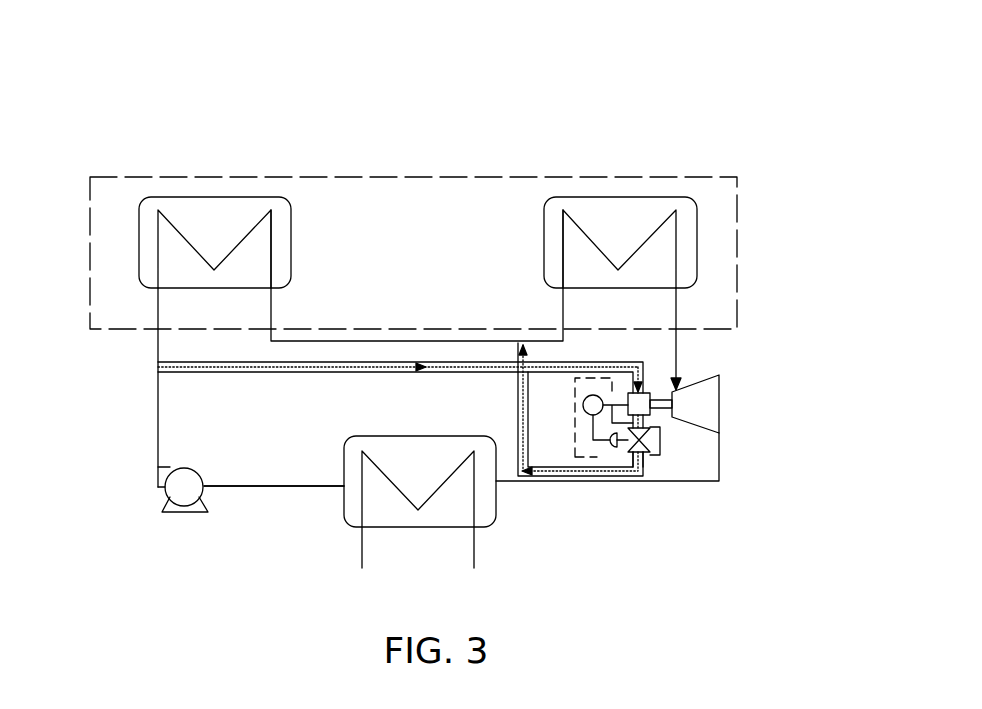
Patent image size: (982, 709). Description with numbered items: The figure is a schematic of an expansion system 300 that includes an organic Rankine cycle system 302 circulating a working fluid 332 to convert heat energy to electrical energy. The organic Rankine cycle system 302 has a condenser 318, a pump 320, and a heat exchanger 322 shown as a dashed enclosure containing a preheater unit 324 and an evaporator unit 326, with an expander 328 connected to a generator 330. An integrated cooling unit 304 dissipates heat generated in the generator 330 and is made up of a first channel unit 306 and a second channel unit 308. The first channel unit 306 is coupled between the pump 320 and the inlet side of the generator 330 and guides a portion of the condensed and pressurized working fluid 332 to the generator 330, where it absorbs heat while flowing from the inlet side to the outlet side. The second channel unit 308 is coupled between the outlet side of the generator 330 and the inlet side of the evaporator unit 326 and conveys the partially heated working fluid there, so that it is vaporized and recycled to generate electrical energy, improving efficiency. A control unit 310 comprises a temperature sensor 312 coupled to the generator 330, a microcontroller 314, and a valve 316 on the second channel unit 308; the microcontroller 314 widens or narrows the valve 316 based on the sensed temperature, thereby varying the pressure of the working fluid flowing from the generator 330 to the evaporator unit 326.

The expansion system 300 is at (733, 80).
The organic Rankine cycle system 302 is at (223, 525).
The integrated cooling unit 304 is at (577, 465).
The first channel unit 306 is at (177, 362).
The second channel unit 308 is at (562, 477).
The control unit 310 is at (573, 422).
The temperature sensor 312 is at (580, 409).
The microcontroller 314 is at (608, 446).
The valve 316 is at (657, 443).
The condenser 318 is at (418, 528).
The pump 320 is at (158, 477).
The heat exchanger 322 is at (477, 177).
The preheater unit 324 is at (190, 197).
The evaporator unit 326 is at (621, 197).
The expander 328 is at (720, 417).
The generator 330 is at (628, 393).
The working fluid 332 is at (158, 420).